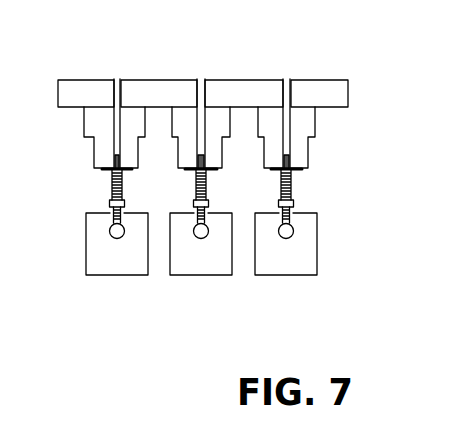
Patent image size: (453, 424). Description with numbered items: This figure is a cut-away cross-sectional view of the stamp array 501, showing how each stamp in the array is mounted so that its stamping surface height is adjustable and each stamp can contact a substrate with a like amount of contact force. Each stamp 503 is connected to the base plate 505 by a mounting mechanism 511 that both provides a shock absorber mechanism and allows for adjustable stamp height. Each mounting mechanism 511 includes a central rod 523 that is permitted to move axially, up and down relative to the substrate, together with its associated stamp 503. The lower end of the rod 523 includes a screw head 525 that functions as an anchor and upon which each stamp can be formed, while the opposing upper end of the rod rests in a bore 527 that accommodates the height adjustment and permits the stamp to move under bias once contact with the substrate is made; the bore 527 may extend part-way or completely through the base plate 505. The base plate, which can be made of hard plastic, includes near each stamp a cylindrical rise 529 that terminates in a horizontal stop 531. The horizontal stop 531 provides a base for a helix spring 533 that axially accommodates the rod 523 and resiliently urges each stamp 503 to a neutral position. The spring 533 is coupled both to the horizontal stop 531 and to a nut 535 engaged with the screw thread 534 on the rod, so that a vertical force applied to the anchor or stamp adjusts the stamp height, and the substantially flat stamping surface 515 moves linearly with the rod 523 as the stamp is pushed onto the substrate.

The stamp array 501 is at (329, 77).
The stamp 503 is at (257, 313).
The base plate 505 is at (340, 110).
The mounting mechanism 511 is at (273, 186).
The stamping surface 515 is at (312, 332).
The central rod 523 is at (115, 155).
The screw head 525 is at (110, 228).
The bore 527 is at (115, 78).
The cylindrical rise 529 is at (85, 122).
The horizontal stop 531 is at (100, 168).
The helix spring 533 is at (115, 187).
The screw thread 534 is at (112, 215).
The nut 535 is at (115, 205).